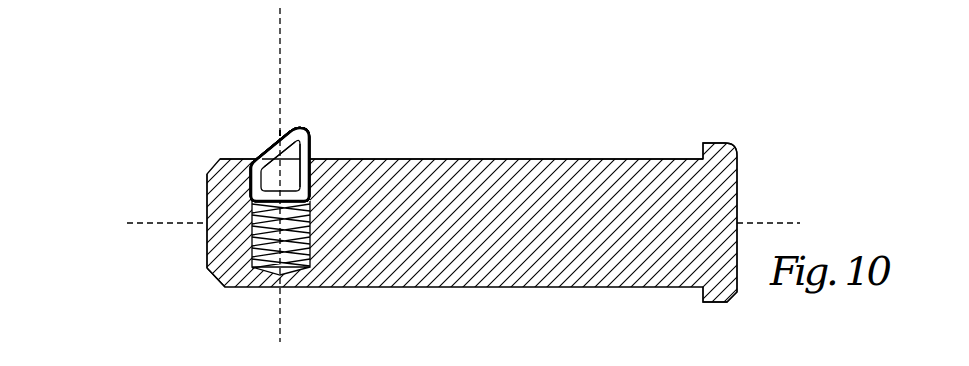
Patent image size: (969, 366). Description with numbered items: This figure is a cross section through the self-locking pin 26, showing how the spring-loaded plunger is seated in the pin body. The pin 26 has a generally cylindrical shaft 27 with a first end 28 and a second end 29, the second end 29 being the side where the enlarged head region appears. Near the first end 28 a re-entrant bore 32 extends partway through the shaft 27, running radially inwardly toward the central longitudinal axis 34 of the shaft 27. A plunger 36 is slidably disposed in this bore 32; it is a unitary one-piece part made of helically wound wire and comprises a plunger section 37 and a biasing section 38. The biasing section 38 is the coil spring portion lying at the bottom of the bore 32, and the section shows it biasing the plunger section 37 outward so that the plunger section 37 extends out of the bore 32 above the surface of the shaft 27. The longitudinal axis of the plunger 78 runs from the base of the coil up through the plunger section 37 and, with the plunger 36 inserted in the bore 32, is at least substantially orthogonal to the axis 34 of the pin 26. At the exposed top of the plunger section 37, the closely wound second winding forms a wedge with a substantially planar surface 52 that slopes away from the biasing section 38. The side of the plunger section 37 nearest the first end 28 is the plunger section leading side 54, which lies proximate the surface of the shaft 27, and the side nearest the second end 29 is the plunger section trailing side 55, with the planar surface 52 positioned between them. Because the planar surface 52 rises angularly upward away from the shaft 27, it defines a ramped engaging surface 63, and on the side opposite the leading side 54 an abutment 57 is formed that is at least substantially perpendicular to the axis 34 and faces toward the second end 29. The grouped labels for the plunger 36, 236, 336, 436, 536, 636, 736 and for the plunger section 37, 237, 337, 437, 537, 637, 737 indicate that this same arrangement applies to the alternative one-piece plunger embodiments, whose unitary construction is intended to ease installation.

The self-locking pin 26 is at (665, 132).
The shaft 27 is at (508, 158).
The first end 28 is at (207, 210).
The second end 29 is at (700, 289).
The re-entrant bore 32 is at (218, 282).
The central longitudinal axis 34 is at (158, 225).
The plunger 36 is at (301, 125).
The plunger 236 is at (280, 164).
The plunger 336 is at (280, 164).
The plunger 436 is at (280, 164).
The plunger 536 is at (280, 164).
The plunger 636 is at (280, 164).
The plunger 736 is at (280, 164).
The plunger section 37 is at (272, 150).
The angled wall 237 is at (273, 146).
The angled wall 337 is at (273, 146).
The angled wall 437 is at (273, 146).
The angled wall 537 is at (273, 146).
The angled wall 637 is at (273, 146).
The angled wall 737 is at (273, 146).
The biasing section 38 is at (300, 270).
The planar surface 52 is at (297, 125).
The plunger section leading side 54 is at (249, 188).
The plunger section trailing side 55 is at (316, 146).
The abutment 57 is at (317, 153).
The ramped engaging surface 63 is at (262, 157).
The longitudinal axis of the plunger 78 is at (278, 52).